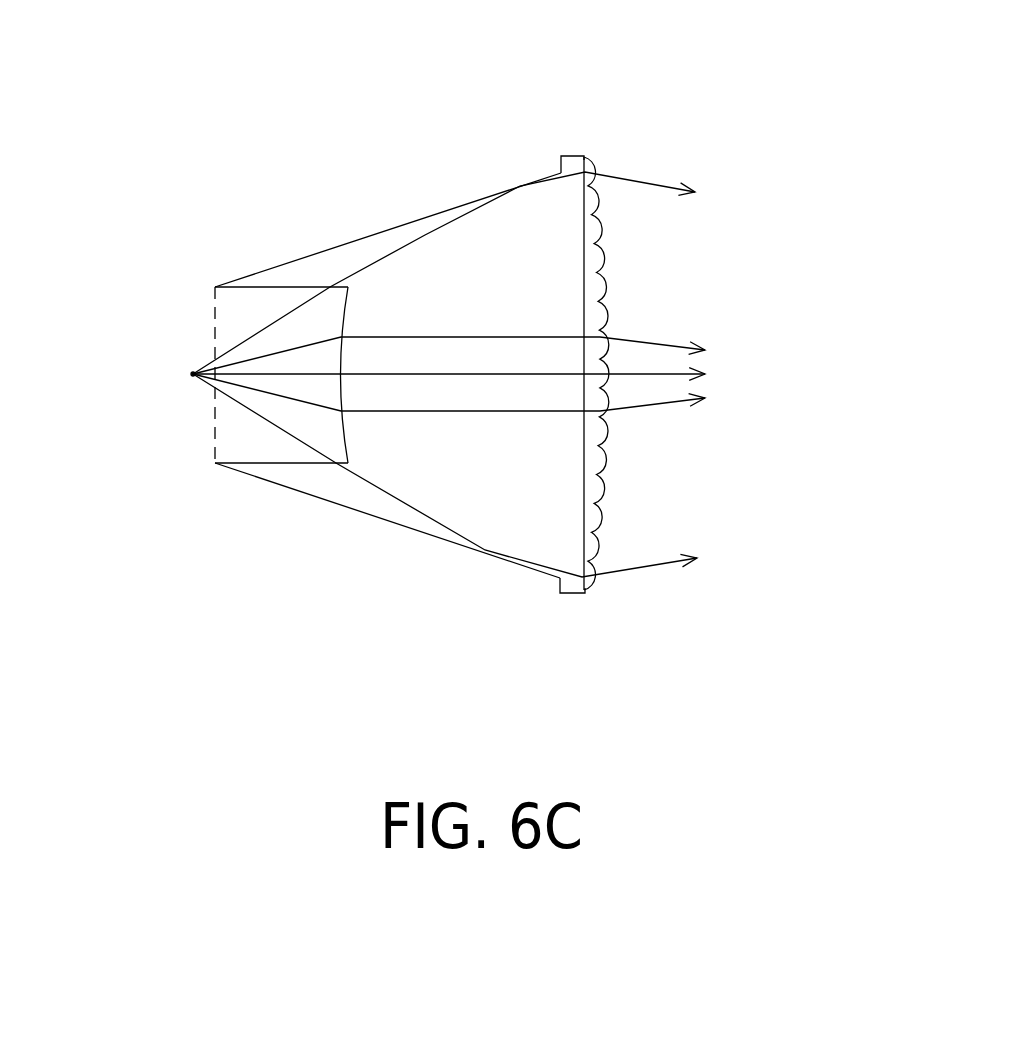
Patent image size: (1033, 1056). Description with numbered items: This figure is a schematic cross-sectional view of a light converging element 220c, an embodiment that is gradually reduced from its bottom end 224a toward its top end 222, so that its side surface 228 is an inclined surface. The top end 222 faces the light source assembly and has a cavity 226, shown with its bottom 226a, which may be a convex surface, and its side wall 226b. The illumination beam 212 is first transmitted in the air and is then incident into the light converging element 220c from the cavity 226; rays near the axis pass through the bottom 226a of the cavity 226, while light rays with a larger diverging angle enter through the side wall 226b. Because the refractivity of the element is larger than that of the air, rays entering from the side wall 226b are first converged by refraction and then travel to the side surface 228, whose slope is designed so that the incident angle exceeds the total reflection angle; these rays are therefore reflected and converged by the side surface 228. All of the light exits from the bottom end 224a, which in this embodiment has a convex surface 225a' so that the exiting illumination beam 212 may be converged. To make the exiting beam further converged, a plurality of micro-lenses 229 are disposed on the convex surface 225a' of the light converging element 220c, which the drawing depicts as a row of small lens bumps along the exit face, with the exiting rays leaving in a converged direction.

The illumination beam 212 is at (193, 374).
The light converging element 220c is at (460, 390).
The top end 222 is at (218, 419).
The bottom end 224a is at (571, 598).
The convex surface 225a' is at (645, 432).
The cavity 226 is at (233, 459).
The bottom of the cavity 226a is at (341, 428).
The side wall of the cavity 226b is at (263, 292).
The side surface 228 is at (440, 212).
The micro-lenses 229 is at (664, 406).